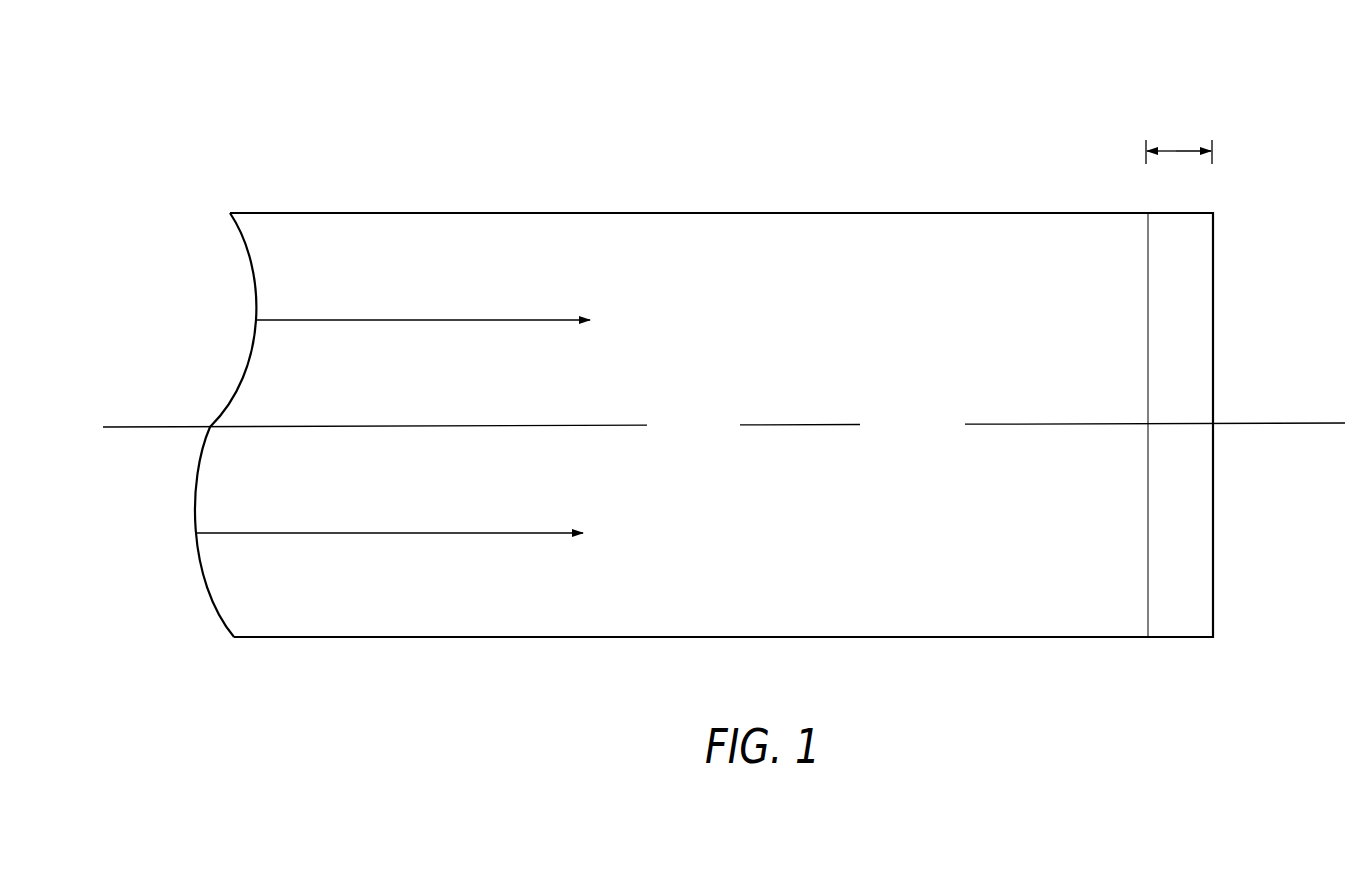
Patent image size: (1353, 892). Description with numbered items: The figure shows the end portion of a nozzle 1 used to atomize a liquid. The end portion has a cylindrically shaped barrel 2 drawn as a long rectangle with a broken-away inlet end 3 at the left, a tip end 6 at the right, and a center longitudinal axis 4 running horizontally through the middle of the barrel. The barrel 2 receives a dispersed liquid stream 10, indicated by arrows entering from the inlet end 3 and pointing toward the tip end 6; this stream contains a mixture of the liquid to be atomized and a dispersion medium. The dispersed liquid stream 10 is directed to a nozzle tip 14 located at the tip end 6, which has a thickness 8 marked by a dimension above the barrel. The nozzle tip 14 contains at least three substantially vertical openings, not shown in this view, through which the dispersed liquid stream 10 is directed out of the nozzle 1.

The nozzle 1 is at (877, 90).
The barrel 2 is at (502, 213).
The inlet end 3 is at (211, 318).
The center longitudinal axis 4 is at (805, 425).
The tip end 6 is at (1148, 263).
The thickness 8 is at (1174, 151).
The dispersed liquid stream 10 is at (373, 320).
The nozzle tip 14 is at (1186, 622).